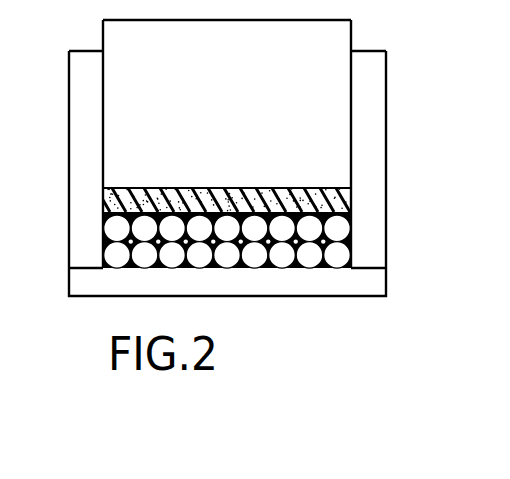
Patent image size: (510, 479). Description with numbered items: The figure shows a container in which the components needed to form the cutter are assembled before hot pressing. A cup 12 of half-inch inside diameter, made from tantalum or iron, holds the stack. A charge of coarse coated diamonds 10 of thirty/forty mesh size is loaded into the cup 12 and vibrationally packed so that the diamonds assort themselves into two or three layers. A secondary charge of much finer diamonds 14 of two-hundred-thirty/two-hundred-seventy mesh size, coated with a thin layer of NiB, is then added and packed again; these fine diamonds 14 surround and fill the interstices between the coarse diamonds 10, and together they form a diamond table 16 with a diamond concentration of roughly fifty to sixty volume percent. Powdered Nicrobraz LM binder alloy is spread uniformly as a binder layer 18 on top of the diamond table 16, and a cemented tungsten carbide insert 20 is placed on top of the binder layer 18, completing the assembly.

The coated diamonds 10 is at (312, 258).
The cup 12 is at (386, 150).
The diamonds 14 is at (332, 240).
The diamond table 16 is at (333, 228).
The binder layer 18 is at (259, 188).
The cemented tungsten carbide insert 20 is at (225, 90).